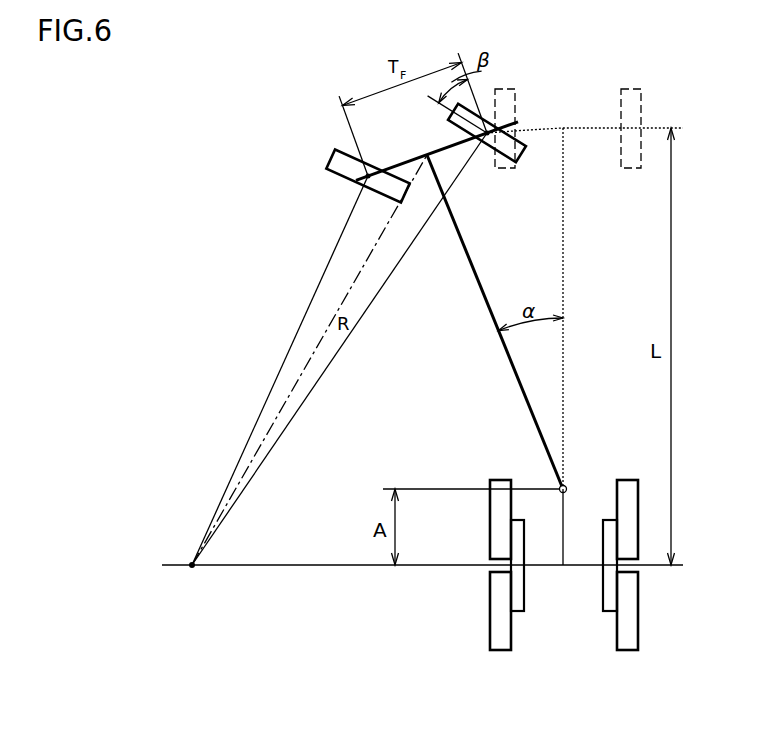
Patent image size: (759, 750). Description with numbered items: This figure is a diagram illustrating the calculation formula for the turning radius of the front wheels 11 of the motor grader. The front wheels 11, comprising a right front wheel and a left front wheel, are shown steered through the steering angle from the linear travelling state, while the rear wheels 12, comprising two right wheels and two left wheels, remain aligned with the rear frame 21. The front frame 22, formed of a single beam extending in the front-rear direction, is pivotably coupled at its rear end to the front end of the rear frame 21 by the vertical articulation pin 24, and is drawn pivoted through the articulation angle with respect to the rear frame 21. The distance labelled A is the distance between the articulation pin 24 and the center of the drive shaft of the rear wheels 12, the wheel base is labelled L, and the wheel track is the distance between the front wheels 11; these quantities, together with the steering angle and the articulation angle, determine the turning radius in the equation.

The front wheels 11 is at (335, 150).
The rear wheels 12 is at (502, 480).
The rear frame 21 is at (566, 537).
The front frame 22 is at (483, 292).
The articulation pin 24 is at (568, 488).